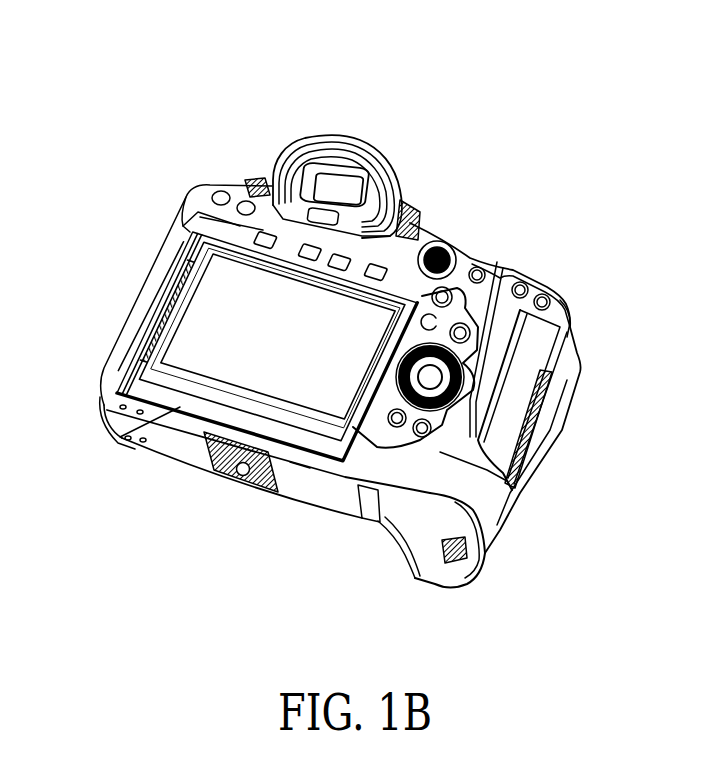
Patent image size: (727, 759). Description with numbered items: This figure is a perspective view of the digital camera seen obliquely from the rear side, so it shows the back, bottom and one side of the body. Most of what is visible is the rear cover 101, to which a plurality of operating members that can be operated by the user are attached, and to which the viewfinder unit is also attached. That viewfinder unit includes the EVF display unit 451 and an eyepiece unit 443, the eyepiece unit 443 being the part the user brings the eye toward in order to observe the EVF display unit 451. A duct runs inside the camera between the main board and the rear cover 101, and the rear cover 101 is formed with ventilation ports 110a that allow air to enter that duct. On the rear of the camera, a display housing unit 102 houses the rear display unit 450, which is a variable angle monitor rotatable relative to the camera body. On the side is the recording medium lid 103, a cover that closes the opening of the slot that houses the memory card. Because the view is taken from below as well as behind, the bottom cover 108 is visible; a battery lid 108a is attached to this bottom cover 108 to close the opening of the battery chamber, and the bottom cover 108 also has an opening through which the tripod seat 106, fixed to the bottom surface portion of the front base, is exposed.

The rear cover 101 is at (485, 312).
The display housing unit 102 is at (120, 437).
The recording medium lid 103 is at (528, 366).
The tripod seat 106 is at (237, 477).
The bottom cover 108 is at (318, 487).
The battery lid 108a is at (436, 562).
The ventilation ports 110a is at (228, 224).
The eyepiece unit 443 is at (400, 172).
The rear display unit 450 is at (207, 325).
The EVF display unit 451 is at (332, 185).